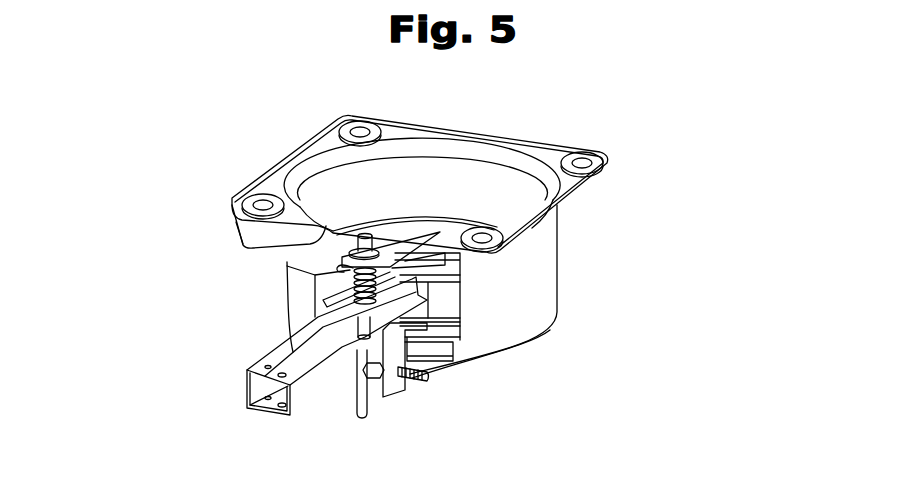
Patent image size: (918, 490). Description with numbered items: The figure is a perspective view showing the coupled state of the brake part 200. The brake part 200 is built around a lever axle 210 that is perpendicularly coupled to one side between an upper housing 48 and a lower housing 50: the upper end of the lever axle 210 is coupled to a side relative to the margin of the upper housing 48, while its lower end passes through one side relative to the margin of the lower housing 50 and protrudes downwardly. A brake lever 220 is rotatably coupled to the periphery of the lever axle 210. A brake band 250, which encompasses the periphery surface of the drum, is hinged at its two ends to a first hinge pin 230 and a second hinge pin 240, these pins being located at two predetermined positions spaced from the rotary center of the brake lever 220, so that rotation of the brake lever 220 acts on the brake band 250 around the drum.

The upper housing 48 is at (531, 148).
The lower housing 50 is at (552, 278).
The brake part 200 is at (311, 347).
The lever axle 210 is at (373, 410).
The brake lever 220 is at (275, 356).
The first hinge pin 230 is at (335, 362).
The second hinge pin 240 is at (414, 292).
The brake band 250 is at (445, 300).